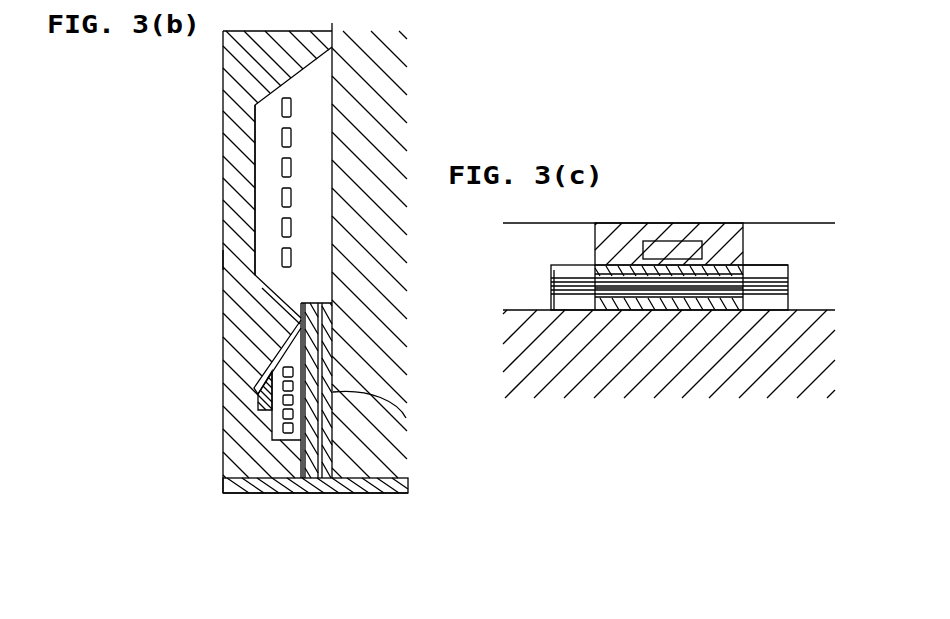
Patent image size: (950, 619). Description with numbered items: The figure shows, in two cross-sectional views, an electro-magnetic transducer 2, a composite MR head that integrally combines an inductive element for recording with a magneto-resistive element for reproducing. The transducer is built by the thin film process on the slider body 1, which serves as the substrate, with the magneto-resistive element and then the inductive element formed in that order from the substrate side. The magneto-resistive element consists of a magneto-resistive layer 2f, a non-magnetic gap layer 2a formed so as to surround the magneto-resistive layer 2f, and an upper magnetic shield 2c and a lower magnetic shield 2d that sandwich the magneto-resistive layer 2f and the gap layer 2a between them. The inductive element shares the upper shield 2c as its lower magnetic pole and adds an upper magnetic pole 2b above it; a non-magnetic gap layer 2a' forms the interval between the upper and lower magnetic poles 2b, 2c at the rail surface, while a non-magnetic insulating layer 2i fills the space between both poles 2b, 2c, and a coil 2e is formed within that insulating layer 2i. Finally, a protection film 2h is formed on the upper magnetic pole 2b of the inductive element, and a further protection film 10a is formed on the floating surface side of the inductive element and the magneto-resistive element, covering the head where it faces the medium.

In FIG. 3b, the slider body 1 is at (400, 488).
In FIG. 3c, the slider body 1 is at (693, 387).
In FIG. 3b, the electro-magnetic transducer 2 is at (205, 258).
In FIG. 3b, the non-magnetic gap layer 2a is at (351, 432).
In FIG. 3c, the non-magnetic gap layer 2a is at (655, 356).
In FIG. 3b, the non-magnetic gap layer 2a' is at (276, 432).
In FIG. 3c, the non-magnetic gap layer 2a' is at (687, 207).
In FIG. 3b, the upper magnetic pole 2b is at (254, 394).
In FIG. 3c, the upper magnetic pole 2b is at (654, 235).
In FIG. 3b, the upper magnetic shield 2c is at (301, 432).
In FIG. 3c, the upper magnetic shield 2c is at (748, 267).
In FIG. 3b, the lower magnetic shield 2d is at (406, 418).
In FIG. 3c, the lower magnetic shield 2d is at (733, 310).
In FIG. 3b, the coil 2e is at (292, 198).
In FIG. 3b, the magneto-resistive layer 2f is at (307, 478).
In FIG. 3c, the magneto-resistive layer 2f is at (677, 287).
In FIG. 3b, the protection film 2h is at (223, 118).
In FIG. 3b, the non-magnetic insulating layer 2i is at (280, 194).
In FIG. 3b, the protection film 10a is at (237, 495).